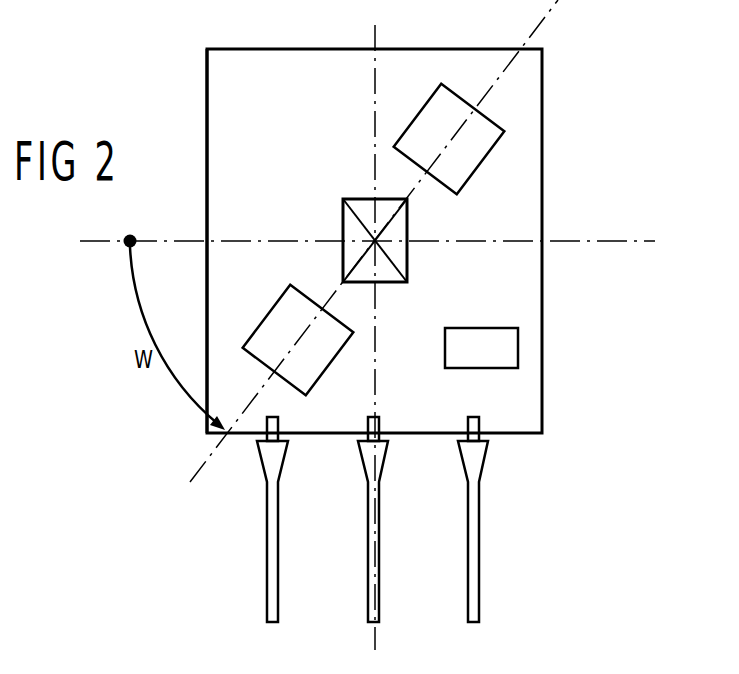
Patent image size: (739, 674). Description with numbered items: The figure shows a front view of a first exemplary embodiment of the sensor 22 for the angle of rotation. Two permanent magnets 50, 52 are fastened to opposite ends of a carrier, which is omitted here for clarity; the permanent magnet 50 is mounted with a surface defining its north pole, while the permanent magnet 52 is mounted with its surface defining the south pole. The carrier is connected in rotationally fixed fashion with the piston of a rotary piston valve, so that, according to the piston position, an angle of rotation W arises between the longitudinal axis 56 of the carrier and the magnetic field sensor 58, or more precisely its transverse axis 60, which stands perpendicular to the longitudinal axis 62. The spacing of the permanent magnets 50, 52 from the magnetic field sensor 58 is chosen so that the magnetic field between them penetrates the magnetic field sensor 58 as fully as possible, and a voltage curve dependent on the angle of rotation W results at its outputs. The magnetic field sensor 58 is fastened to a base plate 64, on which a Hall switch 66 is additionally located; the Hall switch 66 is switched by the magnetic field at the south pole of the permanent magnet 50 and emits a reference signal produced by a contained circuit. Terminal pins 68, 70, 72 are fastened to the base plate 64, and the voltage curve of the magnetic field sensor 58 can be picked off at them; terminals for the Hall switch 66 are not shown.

The sensor for the angle of rotation 22 is at (193, 58).
The permanent magnet 50 is at (492, 150).
The permanent magnet 52 is at (256, 328).
The longitudinal axis of the carrier 56 is at (547, 14).
The magnetic field sensor 58 is at (358, 198).
The transverse axis 60 is at (90, 250).
The longitudinal axis 62 is at (375, 23).
The base plate 64 is at (226, 104).
The Hall switch 66 is at (484, 328).
The terminal pin 68 is at (279, 556).
The terminal pin 70 is at (380, 556).
The terminal pin 72 is at (480, 556).